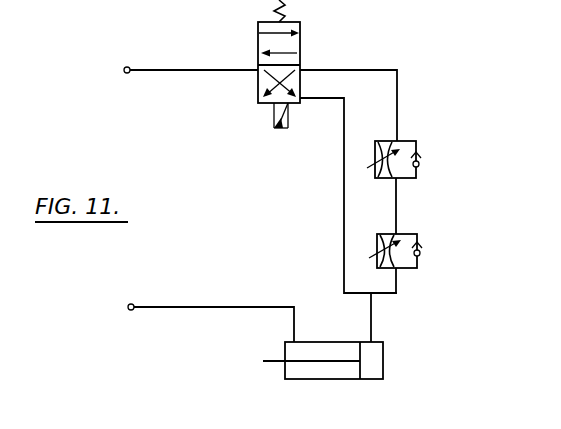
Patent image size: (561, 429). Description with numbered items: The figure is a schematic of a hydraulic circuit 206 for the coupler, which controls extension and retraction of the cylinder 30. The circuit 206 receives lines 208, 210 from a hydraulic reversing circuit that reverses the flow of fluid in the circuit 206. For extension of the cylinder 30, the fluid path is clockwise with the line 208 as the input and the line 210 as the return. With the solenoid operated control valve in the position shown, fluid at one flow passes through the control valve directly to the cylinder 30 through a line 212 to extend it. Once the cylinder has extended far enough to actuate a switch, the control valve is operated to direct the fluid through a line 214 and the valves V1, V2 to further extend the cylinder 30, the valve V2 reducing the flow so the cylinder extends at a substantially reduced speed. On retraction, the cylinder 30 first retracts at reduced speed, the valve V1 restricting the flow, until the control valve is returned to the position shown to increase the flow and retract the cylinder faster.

The hydraulic circuit 206 is at (257, 183).
The line 208 is at (198, 51).
The line 210 is at (199, 306).
The line 212 is at (344, 208).
The line 214 is at (398, 97).
The valve V-1 V1 is at (409, 160).
The valve V-2 V2 is at (411, 253).
The cylinder 30 is at (333, 381).